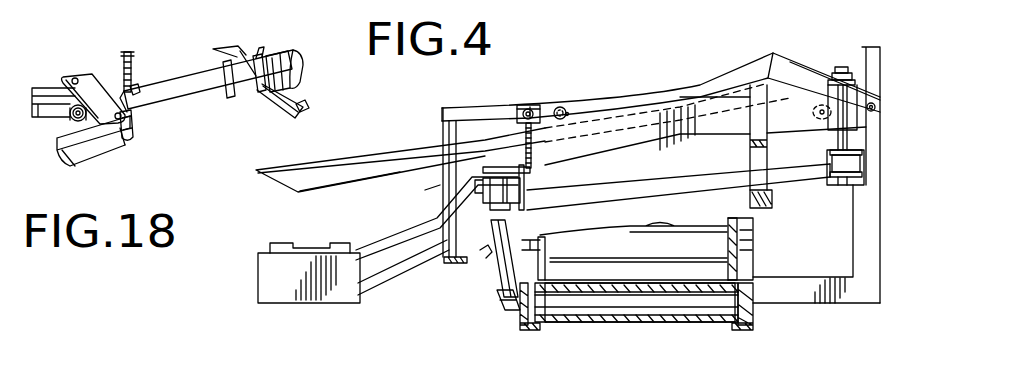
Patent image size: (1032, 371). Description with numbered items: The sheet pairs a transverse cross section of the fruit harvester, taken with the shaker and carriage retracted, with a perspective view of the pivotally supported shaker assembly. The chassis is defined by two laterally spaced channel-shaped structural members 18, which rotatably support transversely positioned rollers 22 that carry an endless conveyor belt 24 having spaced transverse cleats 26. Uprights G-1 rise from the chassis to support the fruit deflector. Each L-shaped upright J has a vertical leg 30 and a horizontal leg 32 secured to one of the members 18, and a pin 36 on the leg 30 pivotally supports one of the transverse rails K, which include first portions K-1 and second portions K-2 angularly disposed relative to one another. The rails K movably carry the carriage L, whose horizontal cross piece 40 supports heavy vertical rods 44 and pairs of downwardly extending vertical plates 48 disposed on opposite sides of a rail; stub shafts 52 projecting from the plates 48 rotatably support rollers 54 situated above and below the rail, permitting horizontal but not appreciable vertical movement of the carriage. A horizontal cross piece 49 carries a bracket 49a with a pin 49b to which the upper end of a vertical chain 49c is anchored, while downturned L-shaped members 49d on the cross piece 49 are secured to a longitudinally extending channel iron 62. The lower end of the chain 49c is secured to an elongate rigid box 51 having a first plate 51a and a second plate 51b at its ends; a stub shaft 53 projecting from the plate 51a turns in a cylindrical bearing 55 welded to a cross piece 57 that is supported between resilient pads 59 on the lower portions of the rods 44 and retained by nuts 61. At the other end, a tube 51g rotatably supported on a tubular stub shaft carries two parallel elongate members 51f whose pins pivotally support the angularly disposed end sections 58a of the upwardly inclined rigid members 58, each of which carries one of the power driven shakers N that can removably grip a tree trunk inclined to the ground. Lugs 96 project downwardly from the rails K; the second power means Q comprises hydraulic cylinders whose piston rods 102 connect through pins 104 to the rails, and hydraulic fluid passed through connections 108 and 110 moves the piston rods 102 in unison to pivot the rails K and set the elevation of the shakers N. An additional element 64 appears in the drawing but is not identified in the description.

In FIG. 4, the structural members 18 is at (520, 326).
In FIG. 4, the rollers 22 is at (597, 307).
In FIG. 4, the endless conveyor belt 24 is at (670, 256).
In FIG. 4, the transverse cleats 26 is at (596, 260).
In FIG. 4, the vertical leg 30 is at (868, 212).
In FIG. 4, the horizontal leg 32 is at (787, 297).
In FIG. 4, the pin 36 is at (867, 113).
In FIG. 4, the horizontal cross piece 40 is at (853, 82).
In FIG. 4, the vertical rods 44 is at (860, 130).
In FIG. 4, the vertical plates 48 is at (733, 130).
In FIG. 4, the horizontal cross piece 49 is at (559, 107).
In FIG. 4, the bracket 49a is at (518, 106).
In FIG. 4, the pin 49b is at (528, 105).
In FIG. 18, the chain 49c is at (136, 86).
In FIG. 4, the chain 49c is at (571, 155).
In FIG. 4, the downturned L-shaped members 49d is at (441, 137).
In FIG. 18, the elongate rigid box 51 is at (200, 100).
In FIG. 4, the elongate rigid box 51 is at (588, 190).
In FIG. 18, the first plate 51a is at (261, 57).
In FIG. 4, the first plate 51a is at (828, 173).
In FIG. 18, the second plate 51b is at (125, 57).
In FIG. 18, the elongate members 51f is at (133, 113).
In FIG. 18, the tube 51g is at (73, 78).
In FIG. 4, the stub shafts 52 is at (563, 107).
In FIG. 18, the stub shaft 53 is at (291, 55).
In FIG. 4, the rollers 54 is at (568, 115).
In FIG. 18, the cylindrical bearing 55 is at (268, 96).
In FIG. 18, the cross piece 57 is at (300, 96).
In FIG. 4, the cross piece 57 is at (862, 164).
In FIG. 4, the upwardly inclined rigid member 58 is at (394, 271).
In FIG. 18, the end sections 58a is at (42, 90).
In FIG. 4, the end sections 58a is at (530, 177).
In FIG. 4, the resilient pads 59 is at (862, 153).
In FIG. 4, the nuts 61 is at (838, 183).
In FIG. 4, the channel iron 62 is at (452, 266).
In FIG. 4, the post foot 64 is at (768, 190).
In FIG. 4, the lugs 96 is at (425, 177).
In FIG. 4, the piston rods 102 is at (510, 229).
In FIG. 4, the pins 104 is at (500, 163).
In FIG. 4, the connection 108 is at (486, 251).
In FIG. 4, the connection 110 is at (491, 298).
In FIG. 4, the transverse rails K is at (365, 178).
In FIG. 4, the first portions of rails K-1 is at (802, 72).
In FIG. 4, the second portions of rails K-2 is at (696, 90).
In FIG. 4, the carriage L is at (639, 100).
In FIG. 4, the power driven shakers N is at (309, 273).
In FIG. 4, the second power means Q is at (546, 245).
In FIG. 4, the L-shaped uprights J is at (857, 235).
In FIG. 4, the uprights G-1 is at (880, 59).